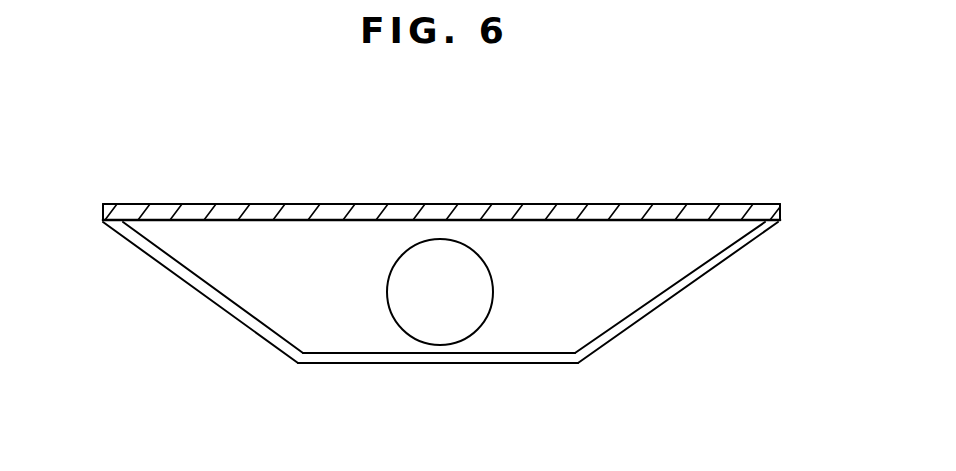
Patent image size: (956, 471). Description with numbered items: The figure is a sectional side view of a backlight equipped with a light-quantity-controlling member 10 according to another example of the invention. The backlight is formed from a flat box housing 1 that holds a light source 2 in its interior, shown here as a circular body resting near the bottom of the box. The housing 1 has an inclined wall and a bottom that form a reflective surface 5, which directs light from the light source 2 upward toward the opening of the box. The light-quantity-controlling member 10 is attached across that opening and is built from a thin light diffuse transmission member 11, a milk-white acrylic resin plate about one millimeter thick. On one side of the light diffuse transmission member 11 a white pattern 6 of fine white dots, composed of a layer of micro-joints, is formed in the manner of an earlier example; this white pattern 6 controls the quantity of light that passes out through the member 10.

The housing 1 is at (663, 307).
The light source 2 is at (493, 297).
The reflective surface 5 is at (340, 353).
The white pattern 6 is at (391, 224).
The light-quantity-controlling member 10 is at (540, 205).
The light diffuse transmission member 11 is at (603, 213).